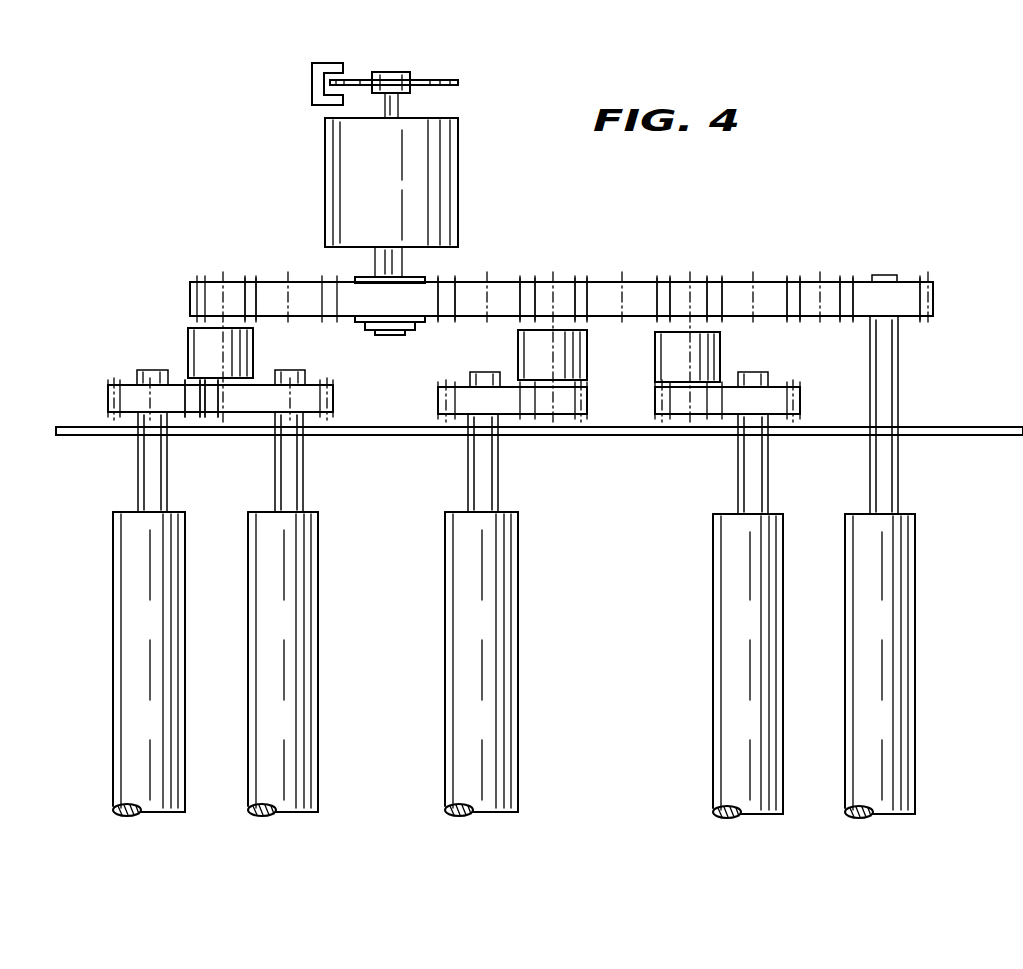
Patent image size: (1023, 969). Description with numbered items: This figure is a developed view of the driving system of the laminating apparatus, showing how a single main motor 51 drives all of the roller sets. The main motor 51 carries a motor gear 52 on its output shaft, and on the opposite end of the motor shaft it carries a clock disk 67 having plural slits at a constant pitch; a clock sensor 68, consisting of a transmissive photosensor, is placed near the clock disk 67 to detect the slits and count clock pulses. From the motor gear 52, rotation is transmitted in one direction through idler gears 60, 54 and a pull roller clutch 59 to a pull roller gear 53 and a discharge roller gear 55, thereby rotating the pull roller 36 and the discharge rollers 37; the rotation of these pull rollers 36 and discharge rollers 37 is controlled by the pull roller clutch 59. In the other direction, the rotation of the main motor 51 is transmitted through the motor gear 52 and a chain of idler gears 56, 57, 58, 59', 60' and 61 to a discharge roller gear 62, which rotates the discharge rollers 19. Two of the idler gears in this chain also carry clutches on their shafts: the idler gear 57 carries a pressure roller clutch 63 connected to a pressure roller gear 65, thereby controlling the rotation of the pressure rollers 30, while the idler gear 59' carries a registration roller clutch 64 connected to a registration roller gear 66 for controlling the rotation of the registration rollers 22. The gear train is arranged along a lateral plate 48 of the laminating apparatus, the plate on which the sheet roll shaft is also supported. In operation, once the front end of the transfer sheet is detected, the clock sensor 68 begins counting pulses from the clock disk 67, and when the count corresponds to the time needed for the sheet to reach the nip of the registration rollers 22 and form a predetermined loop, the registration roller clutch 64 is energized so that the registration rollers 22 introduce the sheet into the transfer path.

The discharge rollers 19 is at (915, 625).
The registration rollers 22 is at (720, 600).
The pressure rollers 30 is at (518, 580).
The pull roller 36 is at (318, 555).
The discharge rollers 37 is at (113, 540).
The lateral plate 48 is at (962, 428).
The main motor 51 is at (458, 162).
The motor gear 52 is at (427, 306).
The pull roller gear 53 is at (312, 390).
The idler gear 54 is at (208, 290).
The discharge roller gear 55 is at (118, 385).
The idler gear 56 is at (498, 292).
The idler gear 57 is at (562, 290).
The idler gear 58 is at (630, 292).
The pull roller clutch 59 is at (193, 348).
The idler gear 59' is at (692, 256).
The idler gear 60 is at (271, 255).
The idler gear 60' is at (753, 268).
The idler gear 61 is at (837, 290).
The discharge roller gear 62 is at (902, 290).
The pressure roller clutch 63 is at (587, 350).
The registration roller clutch 64 is at (655, 372).
The pressure roller gear 65 is at (462, 395).
The registration roller gear 66 is at (768, 397).
The clock disk 67 is at (440, 78).
The clock sensor 68 is at (312, 72).